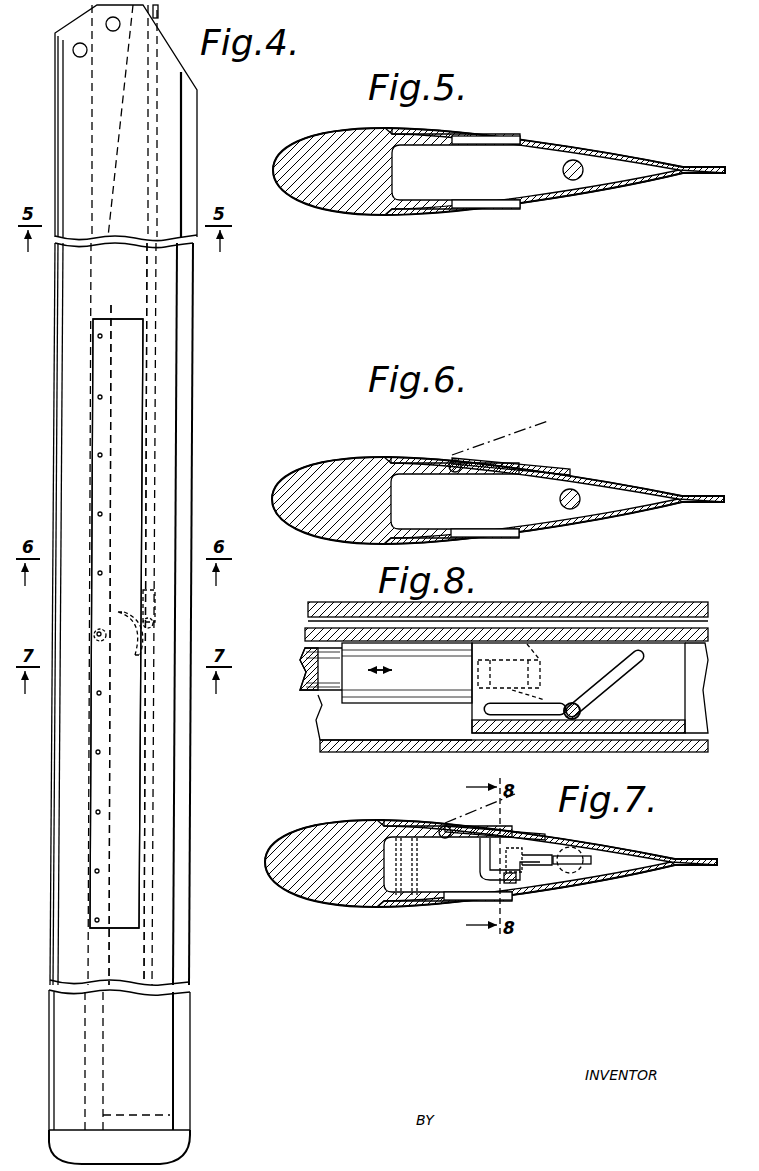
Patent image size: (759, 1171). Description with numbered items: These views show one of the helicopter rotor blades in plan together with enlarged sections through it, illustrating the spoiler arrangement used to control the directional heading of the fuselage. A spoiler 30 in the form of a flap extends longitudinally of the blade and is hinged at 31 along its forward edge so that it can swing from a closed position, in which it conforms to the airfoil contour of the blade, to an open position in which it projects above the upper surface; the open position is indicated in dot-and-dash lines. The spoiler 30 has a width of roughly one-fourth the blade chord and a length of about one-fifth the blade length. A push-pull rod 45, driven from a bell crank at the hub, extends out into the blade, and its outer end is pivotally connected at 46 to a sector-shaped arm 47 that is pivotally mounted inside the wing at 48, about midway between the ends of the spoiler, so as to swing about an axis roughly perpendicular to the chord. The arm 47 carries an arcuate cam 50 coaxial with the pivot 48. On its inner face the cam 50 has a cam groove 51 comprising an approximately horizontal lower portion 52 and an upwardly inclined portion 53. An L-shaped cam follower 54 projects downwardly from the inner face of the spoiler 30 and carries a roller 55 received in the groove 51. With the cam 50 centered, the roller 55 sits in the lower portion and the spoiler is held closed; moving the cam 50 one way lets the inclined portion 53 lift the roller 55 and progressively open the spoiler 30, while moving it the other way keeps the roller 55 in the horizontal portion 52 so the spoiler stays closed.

In FIG. 4, the spoiler 30 is at (139, 832).
In FIG. 6, the spoiler 30 is at (520, 462).
In FIG. 7, the spoiler 30 is at (510, 830).
In FIG. 4, the hinge 31 is at (106, 761).
In FIG. 6, the hinge 31 is at (455, 460).
In FIG. 7, the hinge 31 is at (445, 826).
In FIG. 4, the push-pull rod 45 is at (153, 512).
In FIG. 5, the push-pull rod 45 is at (562, 170).
In FIG. 6, the push-pull rod 45 is at (559, 499).
In FIG. 4, the pivotal connection 46 is at (155, 624).
In FIG. 7, the pivotal connection 46 is at (576, 873).
In FIG. 4, the sector-shaped arm 47 is at (128, 610).
In FIG. 7, the sector-shaped arm 47 is at (455, 900).
In FIG. 4, the pivot 48 is at (99, 636).
In FIG. 7, the pivot 48 is at (402, 898).
In FIG. 7, the arcuate cam 50 is at (527, 868).
In FIG. 8, the cam groove 51 is at (598, 684).
In FIG. 8, the horizontal lower portion 52 is at (511, 672).
In FIG. 8, the upwardly inclined portion 53 is at (632, 662).
In FIG. 7, the L-shaped cam follower 54 is at (478, 856).
In FIG. 8, the roller 55 is at (565, 704).
In FIG. 7, the roller 55 is at (512, 884).